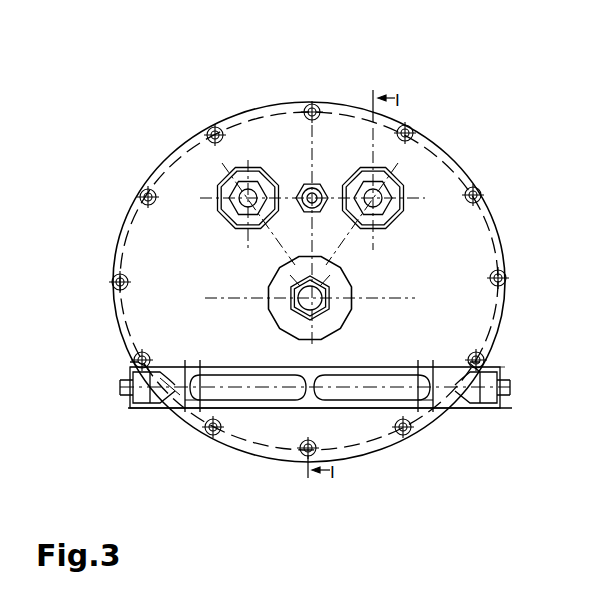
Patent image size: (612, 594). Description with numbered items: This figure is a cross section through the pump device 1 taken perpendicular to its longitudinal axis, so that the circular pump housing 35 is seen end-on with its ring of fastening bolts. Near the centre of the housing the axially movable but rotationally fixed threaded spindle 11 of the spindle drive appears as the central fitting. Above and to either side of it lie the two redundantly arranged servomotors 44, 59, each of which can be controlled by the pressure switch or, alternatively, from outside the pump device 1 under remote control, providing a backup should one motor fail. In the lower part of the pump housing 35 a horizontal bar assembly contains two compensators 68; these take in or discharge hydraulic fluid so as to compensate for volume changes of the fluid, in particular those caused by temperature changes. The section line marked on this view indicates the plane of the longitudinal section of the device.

The pump device 1 is at (428, 70).
The pump housing 35 is at (438, 141).
The servomotor 59 is at (218, 186).
The servomotor 44 is at (404, 192).
The threaded spindle 11 is at (330, 294).
The compensator 68 is at (247, 398).